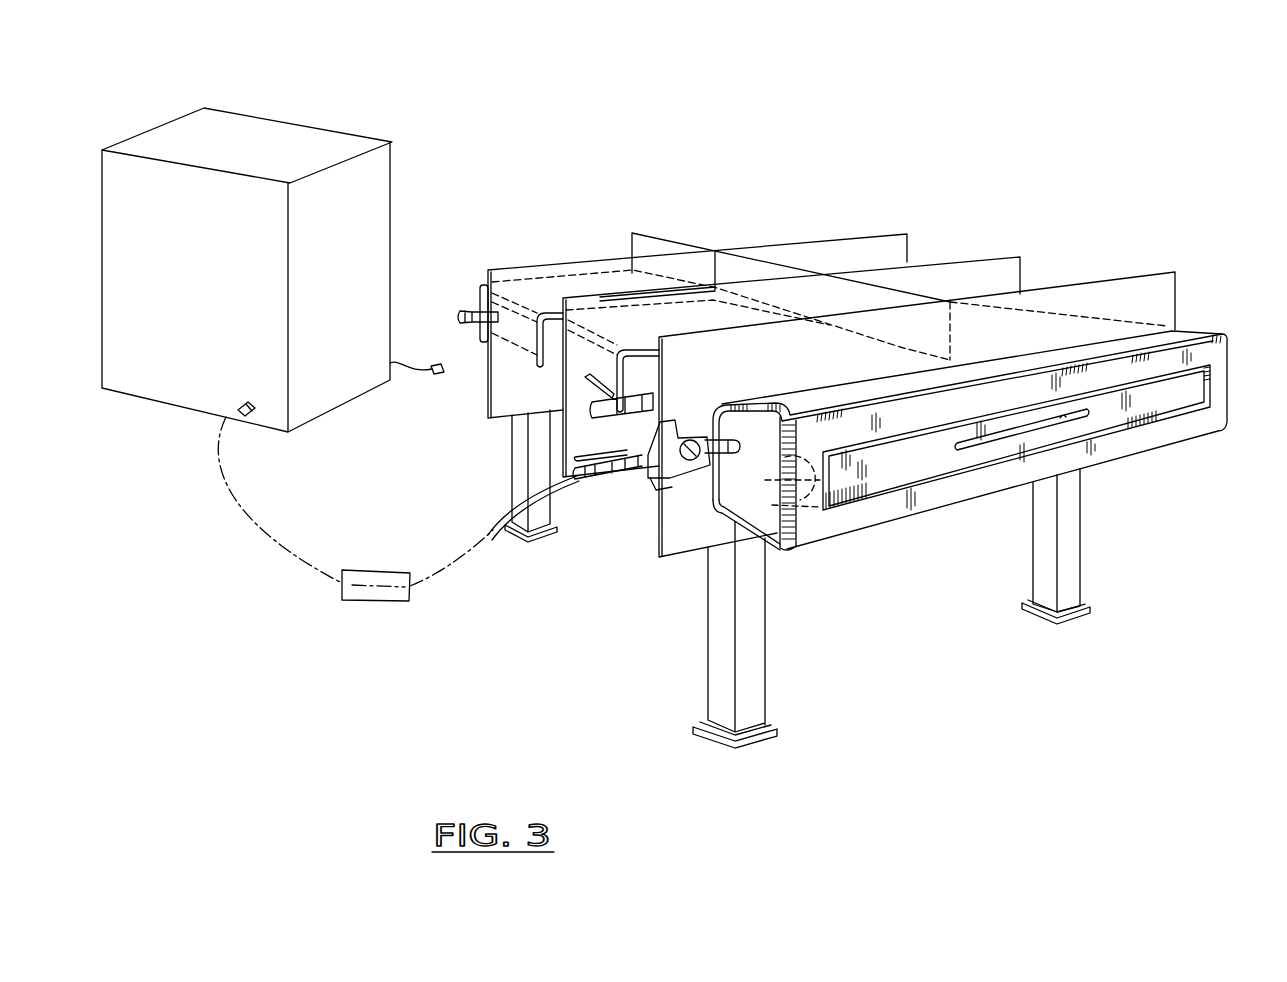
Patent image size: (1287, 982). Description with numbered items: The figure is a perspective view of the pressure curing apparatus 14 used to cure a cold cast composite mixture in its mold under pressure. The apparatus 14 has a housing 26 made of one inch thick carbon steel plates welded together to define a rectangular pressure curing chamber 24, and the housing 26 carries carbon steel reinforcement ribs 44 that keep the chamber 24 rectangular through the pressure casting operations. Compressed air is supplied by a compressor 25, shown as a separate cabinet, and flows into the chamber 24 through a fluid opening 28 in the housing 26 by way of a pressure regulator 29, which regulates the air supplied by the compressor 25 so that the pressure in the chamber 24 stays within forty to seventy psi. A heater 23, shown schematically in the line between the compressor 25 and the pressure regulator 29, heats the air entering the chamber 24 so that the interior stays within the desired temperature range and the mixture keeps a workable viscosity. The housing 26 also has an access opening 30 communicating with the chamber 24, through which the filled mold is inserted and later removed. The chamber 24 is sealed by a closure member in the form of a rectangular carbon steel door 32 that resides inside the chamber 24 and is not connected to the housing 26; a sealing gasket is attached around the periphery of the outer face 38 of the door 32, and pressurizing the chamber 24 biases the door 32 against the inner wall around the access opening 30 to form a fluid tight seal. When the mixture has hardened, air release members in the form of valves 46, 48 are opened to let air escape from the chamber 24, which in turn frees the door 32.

The pressure curing apparatus 14 is at (913, 185).
The heater 23 is at (377, 610).
The pressure curing chamber 24 is at (973, 407).
The compressor 25 is at (312, 142).
The housing 26 is at (1187, 333).
The fluid opening 28 is at (727, 455).
The pressure regulator 29 is at (657, 463).
The access opening 30 is at (1157, 417).
The door 32 is at (877, 480).
The outer face 38 is at (930, 463).
The reinforcement ribs 44 is at (537, 288).
The valve 46 is at (467, 312).
The valve 48 is at (590, 373).